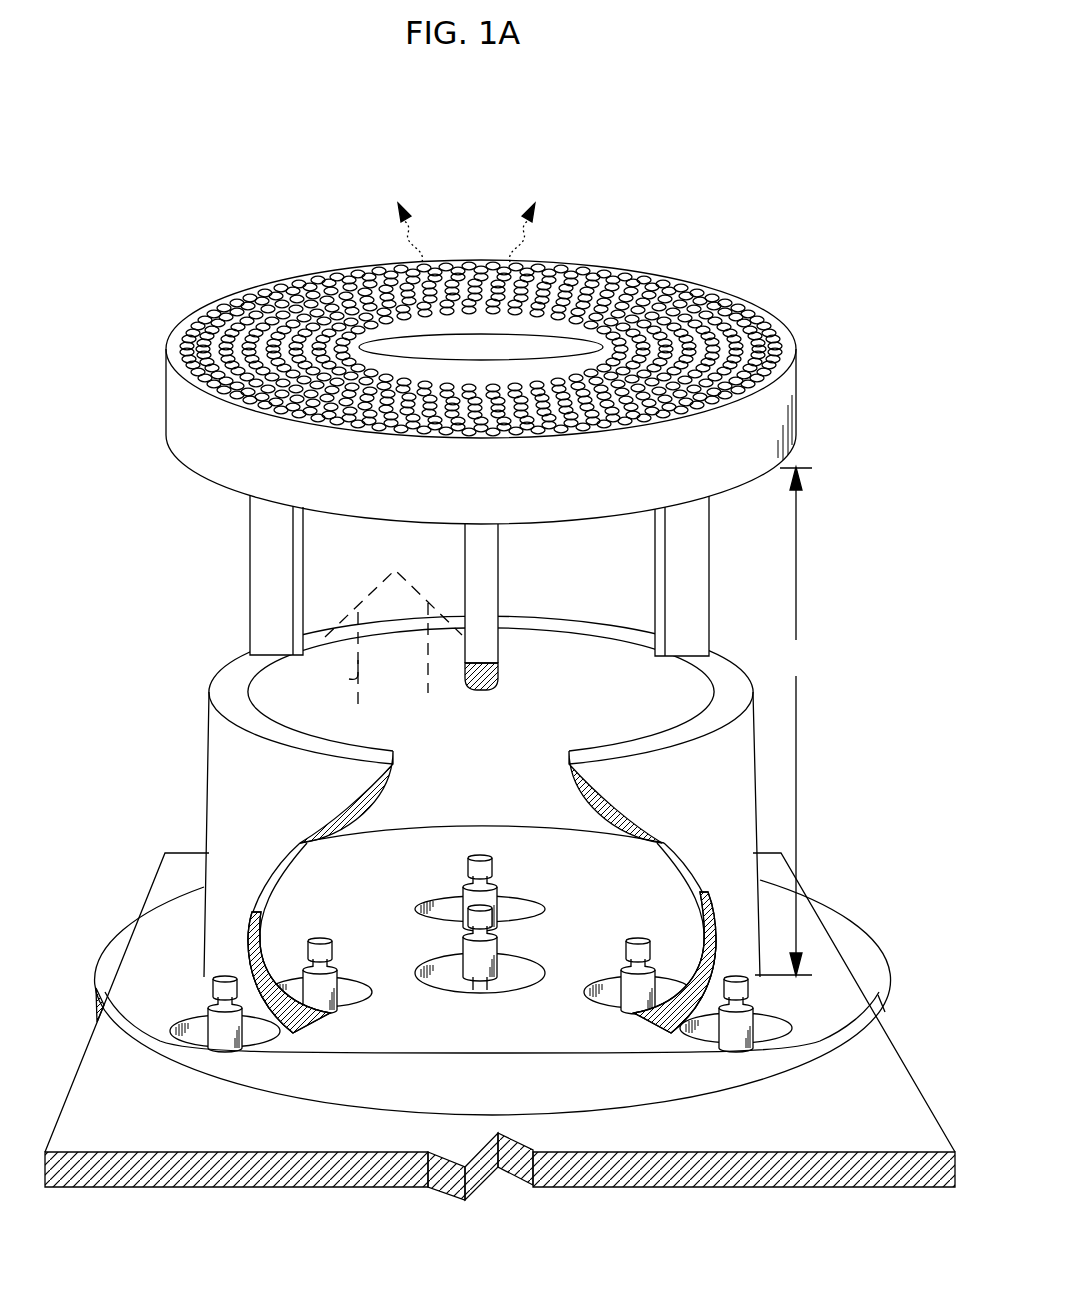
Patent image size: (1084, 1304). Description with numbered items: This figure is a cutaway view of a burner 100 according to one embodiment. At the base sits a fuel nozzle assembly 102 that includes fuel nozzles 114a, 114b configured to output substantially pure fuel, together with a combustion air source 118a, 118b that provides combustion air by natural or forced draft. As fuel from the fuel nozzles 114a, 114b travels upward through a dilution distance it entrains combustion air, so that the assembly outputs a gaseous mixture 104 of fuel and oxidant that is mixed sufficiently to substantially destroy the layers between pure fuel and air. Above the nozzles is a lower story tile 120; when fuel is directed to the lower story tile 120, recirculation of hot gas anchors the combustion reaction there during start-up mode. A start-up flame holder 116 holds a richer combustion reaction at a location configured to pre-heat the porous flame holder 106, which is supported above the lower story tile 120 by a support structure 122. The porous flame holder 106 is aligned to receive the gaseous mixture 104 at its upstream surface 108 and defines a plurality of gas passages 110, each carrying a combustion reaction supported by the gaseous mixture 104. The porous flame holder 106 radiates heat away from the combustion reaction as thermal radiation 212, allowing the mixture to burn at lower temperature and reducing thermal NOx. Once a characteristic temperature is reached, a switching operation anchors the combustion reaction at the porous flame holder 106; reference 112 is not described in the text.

The burner 100 is at (505, 684).
The fuel nozzle assembly 102 is at (876, 930).
The gaseous mixture 104 is at (336, 674).
The porous flame holder 106 is at (166, 401).
The upstream surface 108 is at (446, 592).
The gas passages 110 is at (307, 308).
The top surface 112 is at (216, 330).
The fuel nozzle 114a is at (212, 992).
The fuel nozzle 114b is at (338, 953).
The start-up flame holder 116 is at (234, 693).
The combustion air source 118a is at (204, 1050).
The combustion air source 118b is at (347, 1018).
The lower story tile 120 is at (206, 793).
The support structure 122 is at (332, 512).
The thermal radiation 212 is at (466, 230).